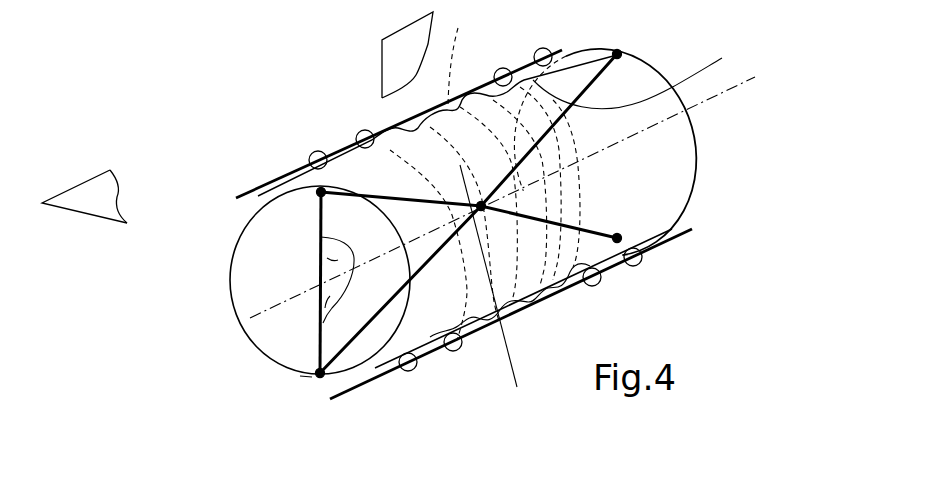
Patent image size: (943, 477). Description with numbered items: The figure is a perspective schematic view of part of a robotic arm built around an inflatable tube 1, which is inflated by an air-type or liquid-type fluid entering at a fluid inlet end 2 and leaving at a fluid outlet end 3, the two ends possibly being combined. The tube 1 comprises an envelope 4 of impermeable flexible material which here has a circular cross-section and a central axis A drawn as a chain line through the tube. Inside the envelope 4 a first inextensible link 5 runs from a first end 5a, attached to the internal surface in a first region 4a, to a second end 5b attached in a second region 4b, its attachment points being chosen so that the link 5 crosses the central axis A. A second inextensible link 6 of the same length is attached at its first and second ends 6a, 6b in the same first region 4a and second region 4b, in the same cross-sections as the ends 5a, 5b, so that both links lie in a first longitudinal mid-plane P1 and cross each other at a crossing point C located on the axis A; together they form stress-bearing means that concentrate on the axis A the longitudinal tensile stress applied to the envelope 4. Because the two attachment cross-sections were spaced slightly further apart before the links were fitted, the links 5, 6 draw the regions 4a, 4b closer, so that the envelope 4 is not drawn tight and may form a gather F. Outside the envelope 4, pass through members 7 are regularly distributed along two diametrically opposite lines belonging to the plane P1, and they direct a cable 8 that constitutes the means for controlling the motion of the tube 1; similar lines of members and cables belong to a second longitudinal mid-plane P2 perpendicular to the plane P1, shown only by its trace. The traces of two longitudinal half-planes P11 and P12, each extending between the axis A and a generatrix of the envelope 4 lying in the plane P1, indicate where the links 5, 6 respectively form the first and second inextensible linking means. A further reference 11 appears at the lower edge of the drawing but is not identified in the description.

The inflatable tube 1 is at (290, 85).
The fluid inlet end 2 is at (230, 269).
The fluid outlet end 3 is at (698, 127).
The envelope 4 is at (666, 94).
The first region 4a is at (692, 163).
The second region 4b is at (312, 377).
The first inextensible link 5 is at (641, 90).
The first end of the first inextensible link 5a is at (622, 55).
The second end of the first inextensible link 5b is at (278, 343).
The second inextensible link 6 is at (588, 229).
The first end of the second inextensible link 6a is at (621, 233).
The second end of the second inextensible link 6b is at (320, 197).
The pass through members 7 is at (362, 131).
The cable 8 is at (364, 386).
The element 11 is at (512, 472).
The central axis A is at (513, 191).
The gather F is at (457, 53).
The crossing point C is at (492, 289).
The first longitudinal mid-plane P1 is at (407, 55).
The second longitudinal mid-plane P2 is at (84, 196).
The longitudinal half-plane P11 is at (313, 264).
The longitudinal half-plane P12 is at (323, 305).